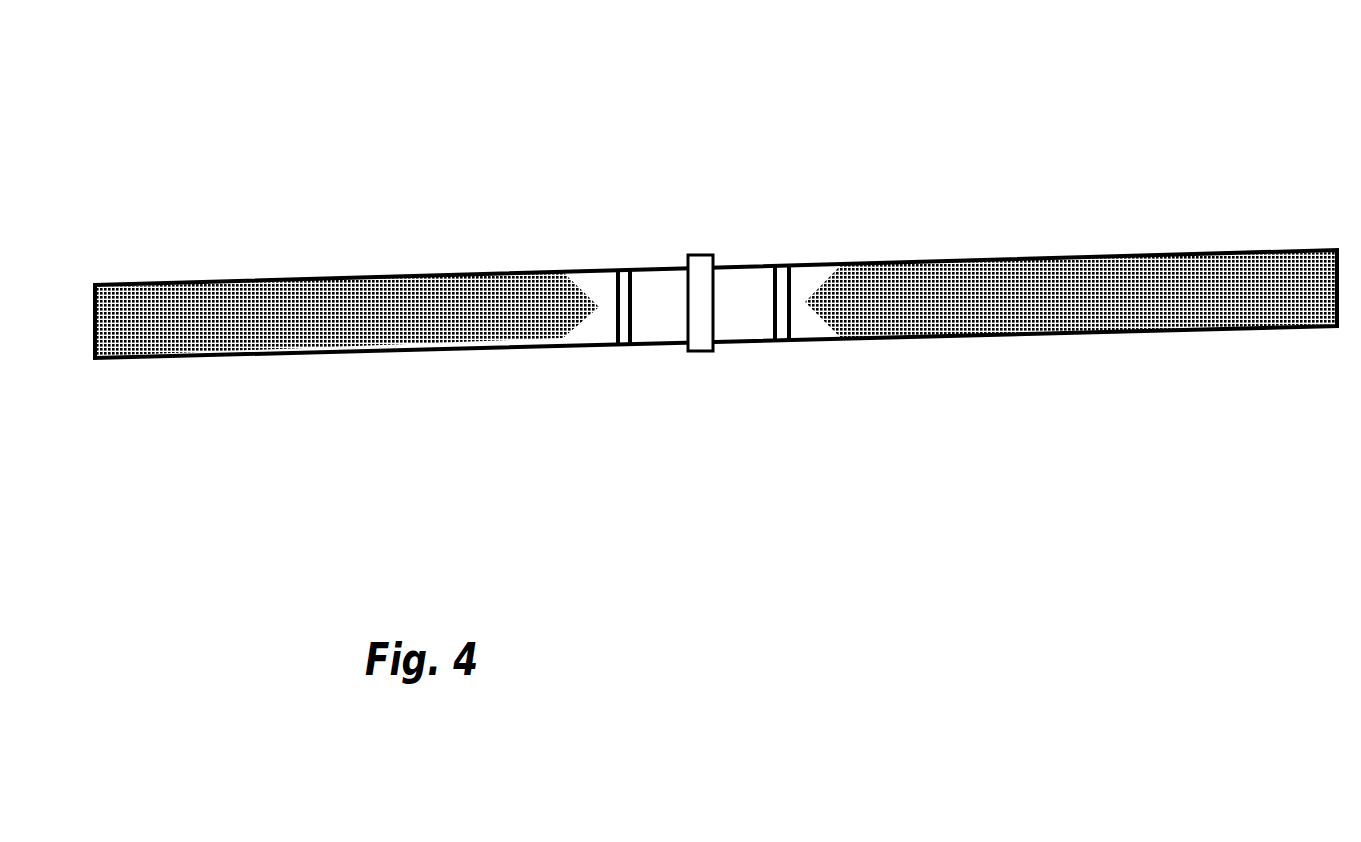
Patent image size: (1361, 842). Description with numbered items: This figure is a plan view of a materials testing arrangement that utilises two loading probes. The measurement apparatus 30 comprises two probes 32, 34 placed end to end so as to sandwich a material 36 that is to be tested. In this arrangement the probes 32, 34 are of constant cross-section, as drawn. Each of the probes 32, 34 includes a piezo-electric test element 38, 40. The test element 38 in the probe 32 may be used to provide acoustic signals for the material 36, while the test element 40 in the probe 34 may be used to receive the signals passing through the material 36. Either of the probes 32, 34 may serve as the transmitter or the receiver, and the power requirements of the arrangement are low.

The measurement apparatus 30 is at (332, 357).
The probe 32 is at (487, 252).
The probe 34 is at (932, 242).
The material 36 is at (710, 347).
The piezo-electric test element 38 is at (622, 270).
The piezo-electric test element 40 is at (785, 263).